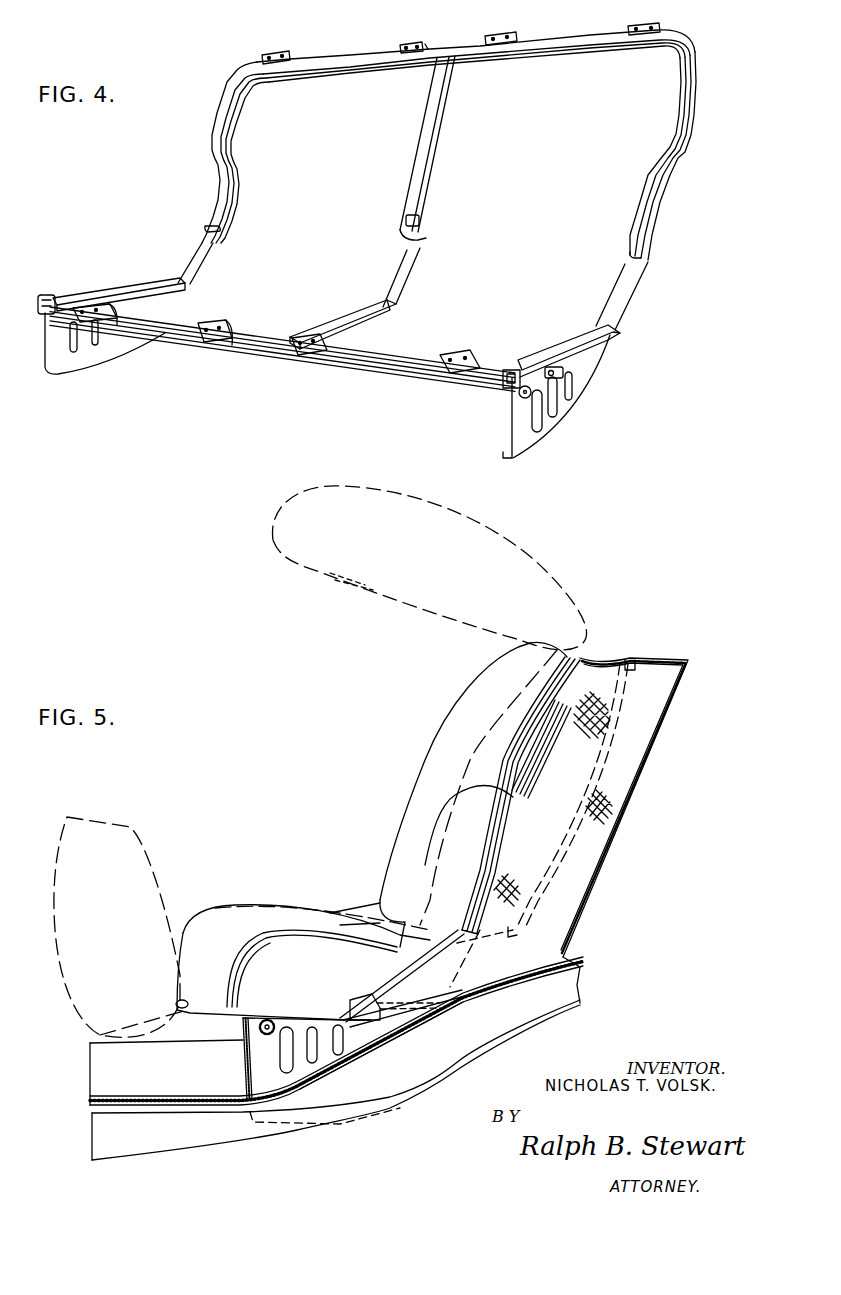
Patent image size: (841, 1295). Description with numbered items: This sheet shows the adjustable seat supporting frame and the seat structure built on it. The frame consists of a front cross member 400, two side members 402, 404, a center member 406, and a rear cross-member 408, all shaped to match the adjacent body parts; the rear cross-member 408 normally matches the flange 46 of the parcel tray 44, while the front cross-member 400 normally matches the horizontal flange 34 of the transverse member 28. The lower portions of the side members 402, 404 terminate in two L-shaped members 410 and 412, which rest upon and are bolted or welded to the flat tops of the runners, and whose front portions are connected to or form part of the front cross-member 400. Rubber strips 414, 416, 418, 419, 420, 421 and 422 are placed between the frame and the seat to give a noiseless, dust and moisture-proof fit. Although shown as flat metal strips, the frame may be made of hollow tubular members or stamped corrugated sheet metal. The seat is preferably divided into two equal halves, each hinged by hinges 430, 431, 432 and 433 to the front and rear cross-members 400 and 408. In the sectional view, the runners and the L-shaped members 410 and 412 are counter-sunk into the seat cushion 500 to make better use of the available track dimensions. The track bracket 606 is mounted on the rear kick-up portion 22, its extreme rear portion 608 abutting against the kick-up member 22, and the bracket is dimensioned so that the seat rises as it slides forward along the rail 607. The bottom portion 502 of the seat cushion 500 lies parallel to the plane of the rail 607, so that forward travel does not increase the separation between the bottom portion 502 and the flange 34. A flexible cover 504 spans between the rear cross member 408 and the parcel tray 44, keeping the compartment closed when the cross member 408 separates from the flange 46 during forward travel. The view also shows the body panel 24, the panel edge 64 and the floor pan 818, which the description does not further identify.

In FIG. 4, the front cross member 400 is at (417, 355).
In FIG. 4, the side member 402 is at (200, 250).
In FIG. 4, the side member 404 is at (623, 300).
In FIG. 4, the center member 406 is at (408, 255).
In FIG. 4, the rear cross-member 408 is at (527, 58).
In FIG. 4, the L-shaped member 410 is at (45, 296).
In FIG. 4, the L-shaped member 412 is at (507, 369).
In FIG. 4, the rubber strip 414 is at (113, 284).
In FIG. 4, the rubber strip 416 is at (213, 129).
In FIG. 4, the rubber strip 418 is at (427, 52).
In FIG. 4, the rubber strip 419 is at (680, 110).
In FIG. 4, the rubber strip 420 is at (572, 340).
In FIG. 4, the rubber strip 421 is at (437, 112).
In FIG. 4, the rubber strip 422 is at (325, 315).
In FIG. 4, the hinge 430 is at (198, 327).
In FIG. 4, the hinge 431 is at (440, 373).
In FIG. 4, the hinge 432 is at (400, 45).
In FIG. 4, the hinge 433 is at (628, 27).
In FIG. 5, the rear kick-up portion 22 is at (383, 1047).
In FIG. 5, the vehicle body panel 24 is at (336, 1072).
In FIG. 5, the transverse member 28 is at (249, 1074).
In FIG. 5, the horizontal flange 34 is at (253, 1017).
In FIG. 5, the parcel tray 44 is at (586, 815).
In FIG. 5, the flange 46 is at (630, 667).
In FIG. 5, the back panel edge 64 is at (613, 847).
In FIG. 5, the seat cushion 500 is at (267, 903).
In FIG. 5, the bottom portion 502 is at (207, 1020).
In FIG. 5, the flexible cover 504 is at (620, 657).
In FIG. 5, the track bracket 606 is at (322, 1060).
In FIG. 5, the rail 607 is at (397, 1000).
In FIG. 5, the extreme rear portion 608 is at (388, 1027).
In FIG. 5, the floor pan 818 is at (195, 1143).